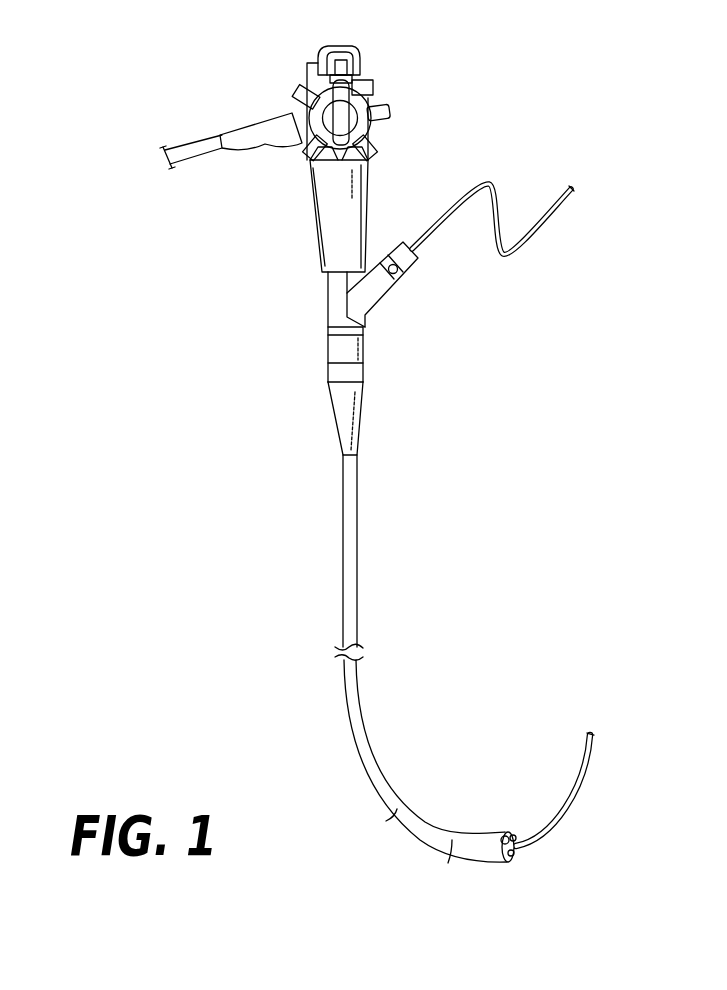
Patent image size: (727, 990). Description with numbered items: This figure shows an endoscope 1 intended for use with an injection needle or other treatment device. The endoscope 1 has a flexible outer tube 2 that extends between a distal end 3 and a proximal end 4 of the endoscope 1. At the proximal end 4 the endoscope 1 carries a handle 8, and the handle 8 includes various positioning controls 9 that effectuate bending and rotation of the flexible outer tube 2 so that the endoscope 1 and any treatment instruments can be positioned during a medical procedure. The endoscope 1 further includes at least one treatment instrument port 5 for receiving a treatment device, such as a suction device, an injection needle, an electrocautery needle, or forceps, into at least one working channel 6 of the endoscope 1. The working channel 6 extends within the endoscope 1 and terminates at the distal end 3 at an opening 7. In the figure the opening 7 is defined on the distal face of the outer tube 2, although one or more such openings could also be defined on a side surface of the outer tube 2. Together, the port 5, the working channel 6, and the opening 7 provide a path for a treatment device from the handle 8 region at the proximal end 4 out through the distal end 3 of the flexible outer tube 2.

The endoscope 1 is at (92, 62).
The flexible outer tube 2 is at (355, 575).
The distal end 3 is at (515, 871).
The proximal end 4 is at (162, 225).
The treatment instrument port 5 is at (403, 280).
The working channel 6 is at (518, 837).
The opening 7 is at (523, 850).
The handle 8 is at (315, 210).
The positioning controls 9 is at (360, 62).